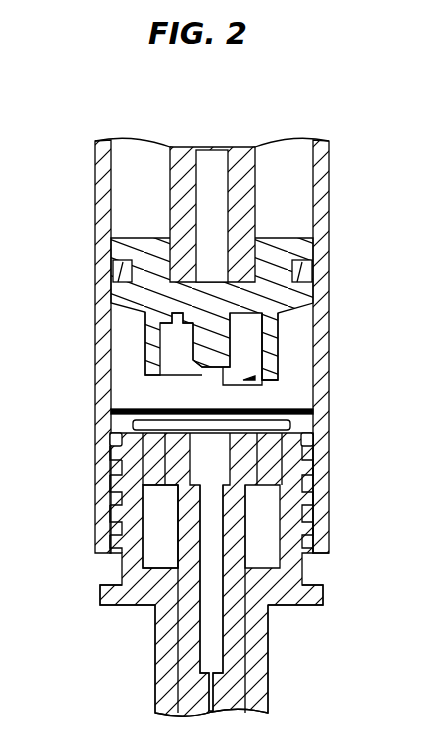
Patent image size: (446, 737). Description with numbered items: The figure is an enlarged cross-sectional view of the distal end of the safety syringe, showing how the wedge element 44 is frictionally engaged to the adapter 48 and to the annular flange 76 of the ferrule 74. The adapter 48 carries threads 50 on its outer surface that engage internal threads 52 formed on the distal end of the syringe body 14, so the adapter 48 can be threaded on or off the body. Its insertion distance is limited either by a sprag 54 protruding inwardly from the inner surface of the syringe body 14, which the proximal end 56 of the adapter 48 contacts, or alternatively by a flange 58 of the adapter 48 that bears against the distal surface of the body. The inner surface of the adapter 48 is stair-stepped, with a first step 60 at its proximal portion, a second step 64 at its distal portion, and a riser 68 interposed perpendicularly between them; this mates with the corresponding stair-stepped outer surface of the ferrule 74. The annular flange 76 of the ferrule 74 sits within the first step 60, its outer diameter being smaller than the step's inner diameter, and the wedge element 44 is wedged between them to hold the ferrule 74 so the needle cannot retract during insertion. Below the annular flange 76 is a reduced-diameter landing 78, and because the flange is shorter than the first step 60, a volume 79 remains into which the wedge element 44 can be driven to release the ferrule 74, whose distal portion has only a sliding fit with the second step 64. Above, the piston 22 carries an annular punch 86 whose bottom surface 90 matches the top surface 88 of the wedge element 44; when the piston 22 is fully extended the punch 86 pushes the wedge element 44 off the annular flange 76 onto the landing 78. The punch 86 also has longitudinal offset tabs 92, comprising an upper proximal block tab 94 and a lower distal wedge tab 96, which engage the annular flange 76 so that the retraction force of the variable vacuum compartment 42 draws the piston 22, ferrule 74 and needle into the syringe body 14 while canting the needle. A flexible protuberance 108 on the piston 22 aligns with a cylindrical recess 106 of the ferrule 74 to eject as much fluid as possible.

The syringe body 14 is at (95, 180).
The piston 22 is at (298, 243).
The variable vacuum compartment 42 is at (130, 320).
The wedge element 44 is at (270, 468).
The adapter 48 is at (117, 637).
The threads 50 is at (118, 520).
The internal threads 52 is at (112, 462).
The sprag 54 is at (112, 418).
The proximal end of the adapter 56 is at (108, 440).
The flange 58 is at (310, 588).
The first step 60 is at (148, 562).
The second step 64 is at (178, 655).
The riser 68 is at (125, 608).
The ferrule 74 is at (313, 553).
The annular flange 76 is at (115, 450).
The landing 78 is at (128, 553).
The volume 79 is at (117, 498).
The punch 86 is at (272, 328).
The top surface of the wedge element 88 is at (148, 411).
The punch bottom surface 90 is at (140, 334).
The longitudinal offset tabs 92 is at (110, 286).
The upper proximal block tab 94 is at (120, 272).
The lower distal wedge tab 96 is at (296, 408).
The recess 106 is at (307, 437).
The protuberance 108 is at (208, 330).